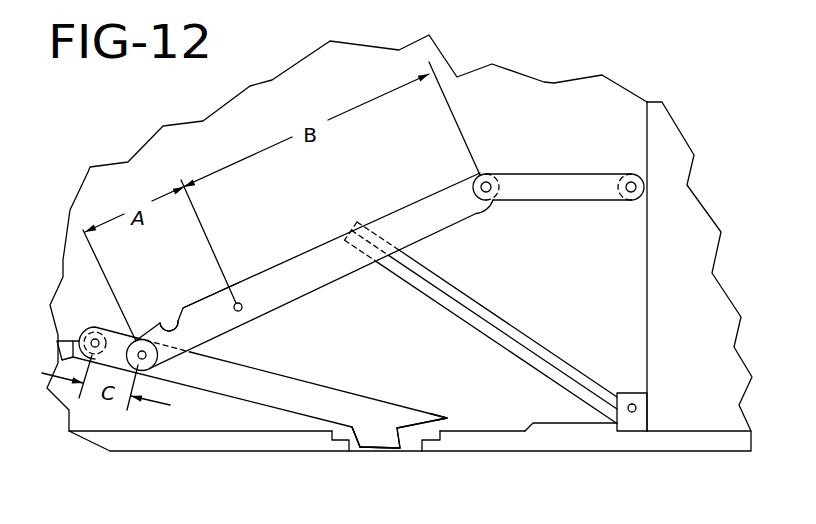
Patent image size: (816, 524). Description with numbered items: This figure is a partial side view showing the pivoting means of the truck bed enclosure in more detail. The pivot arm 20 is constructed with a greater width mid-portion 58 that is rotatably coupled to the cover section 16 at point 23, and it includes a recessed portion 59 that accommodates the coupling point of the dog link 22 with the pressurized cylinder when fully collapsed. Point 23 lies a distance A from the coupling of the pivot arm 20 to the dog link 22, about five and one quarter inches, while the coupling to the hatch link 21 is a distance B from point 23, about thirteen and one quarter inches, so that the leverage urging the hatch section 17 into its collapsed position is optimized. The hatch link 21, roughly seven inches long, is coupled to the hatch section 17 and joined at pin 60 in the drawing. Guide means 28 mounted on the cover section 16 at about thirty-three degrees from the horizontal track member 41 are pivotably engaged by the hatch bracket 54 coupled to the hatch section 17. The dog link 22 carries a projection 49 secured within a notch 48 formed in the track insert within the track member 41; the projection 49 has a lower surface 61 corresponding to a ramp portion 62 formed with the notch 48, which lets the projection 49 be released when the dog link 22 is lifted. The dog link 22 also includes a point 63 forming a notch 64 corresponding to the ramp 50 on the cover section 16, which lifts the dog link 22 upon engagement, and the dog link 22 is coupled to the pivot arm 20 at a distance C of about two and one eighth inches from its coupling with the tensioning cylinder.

The cover section 16 is at (397, 132).
The hatch section 17 is at (672, 320).
The pivot arm 20 is at (309, 247).
The hatch link 21 is at (537, 174).
The dog link 22 is at (332, 387).
The point 23 is at (243, 306).
The guide means 28 is at (542, 335).
The track member 41 is at (227, 443).
The notch 48 is at (398, 446).
The projection 49 is at (389, 418).
The ramp 50 is at (553, 425).
The hatch bracket 54 is at (646, 400).
The greater width mid-portion 58 is at (206, 297).
The recessed portion 59 is at (170, 324).
The pin 60 is at (643, 201).
The lower surface 61 is at (369, 447).
The ramp portion 62 is at (350, 424).
The point 63 is at (428, 421).
The notch 64 is at (447, 419).